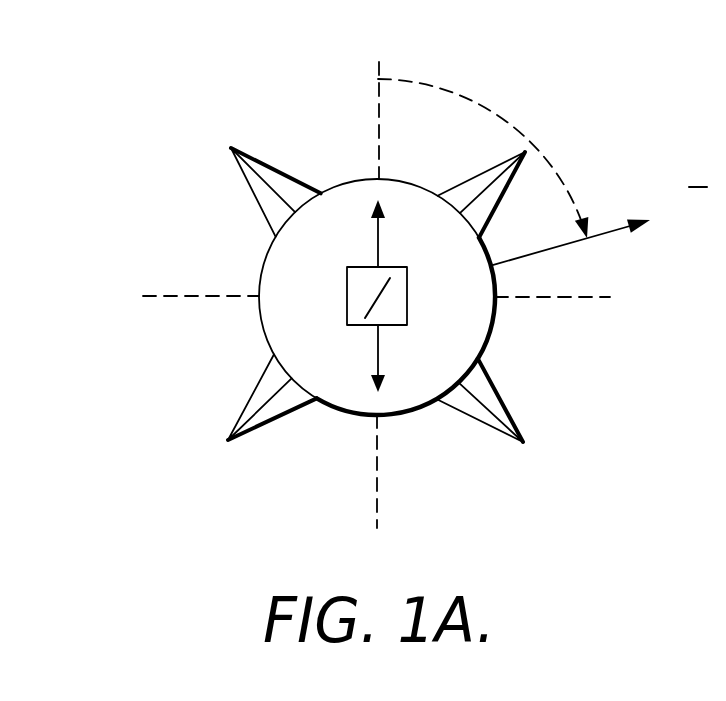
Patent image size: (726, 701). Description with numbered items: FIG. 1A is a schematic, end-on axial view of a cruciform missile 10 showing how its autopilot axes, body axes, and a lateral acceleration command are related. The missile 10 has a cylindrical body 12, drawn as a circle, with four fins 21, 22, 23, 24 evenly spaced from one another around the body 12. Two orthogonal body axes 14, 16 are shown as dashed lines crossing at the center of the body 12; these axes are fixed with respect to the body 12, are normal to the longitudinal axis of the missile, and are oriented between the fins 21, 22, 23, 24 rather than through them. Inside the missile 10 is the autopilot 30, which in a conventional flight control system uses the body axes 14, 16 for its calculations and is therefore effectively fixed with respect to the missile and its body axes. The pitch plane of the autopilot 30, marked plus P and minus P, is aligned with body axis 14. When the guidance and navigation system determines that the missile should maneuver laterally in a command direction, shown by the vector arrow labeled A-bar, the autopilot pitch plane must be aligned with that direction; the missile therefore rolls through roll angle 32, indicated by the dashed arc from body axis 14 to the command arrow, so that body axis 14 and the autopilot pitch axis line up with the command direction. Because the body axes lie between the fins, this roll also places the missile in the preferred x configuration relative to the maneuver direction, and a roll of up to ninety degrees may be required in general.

The missile 10 is at (146, 343).
The cylindrical body 12 is at (262, 324).
The body axis 14 is at (380, 112).
The body axis 16 is at (587, 299).
The fin 21 is at (243, 173).
The fin 22 is at (463, 180).
The fin 23 is at (478, 419).
The fin 24 is at (287, 415).
The autopilot 30 is at (407, 300).
The roll angle 32 is at (572, 195).